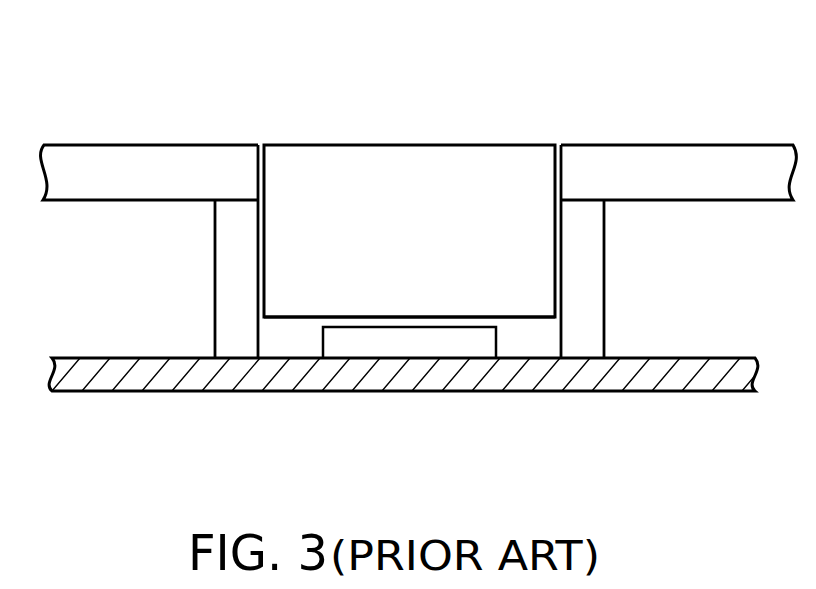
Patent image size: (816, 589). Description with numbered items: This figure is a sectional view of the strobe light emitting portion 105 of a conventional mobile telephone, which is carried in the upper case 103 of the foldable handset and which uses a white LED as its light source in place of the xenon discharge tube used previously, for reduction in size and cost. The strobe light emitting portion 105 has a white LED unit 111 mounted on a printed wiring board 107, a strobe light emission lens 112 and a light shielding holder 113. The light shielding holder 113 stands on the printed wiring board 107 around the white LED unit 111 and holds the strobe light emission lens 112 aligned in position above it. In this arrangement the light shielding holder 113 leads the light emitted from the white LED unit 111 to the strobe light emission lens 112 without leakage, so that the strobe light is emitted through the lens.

The upper case 103 is at (673, 162).
The strobe light emitting portion 105 is at (495, 128).
The printed wiring board 107 is at (706, 375).
The white LED unit 111 is at (413, 338).
The strobe light emission lens 112 is at (292, 293).
The light shielding holder 113 is at (192, 272).